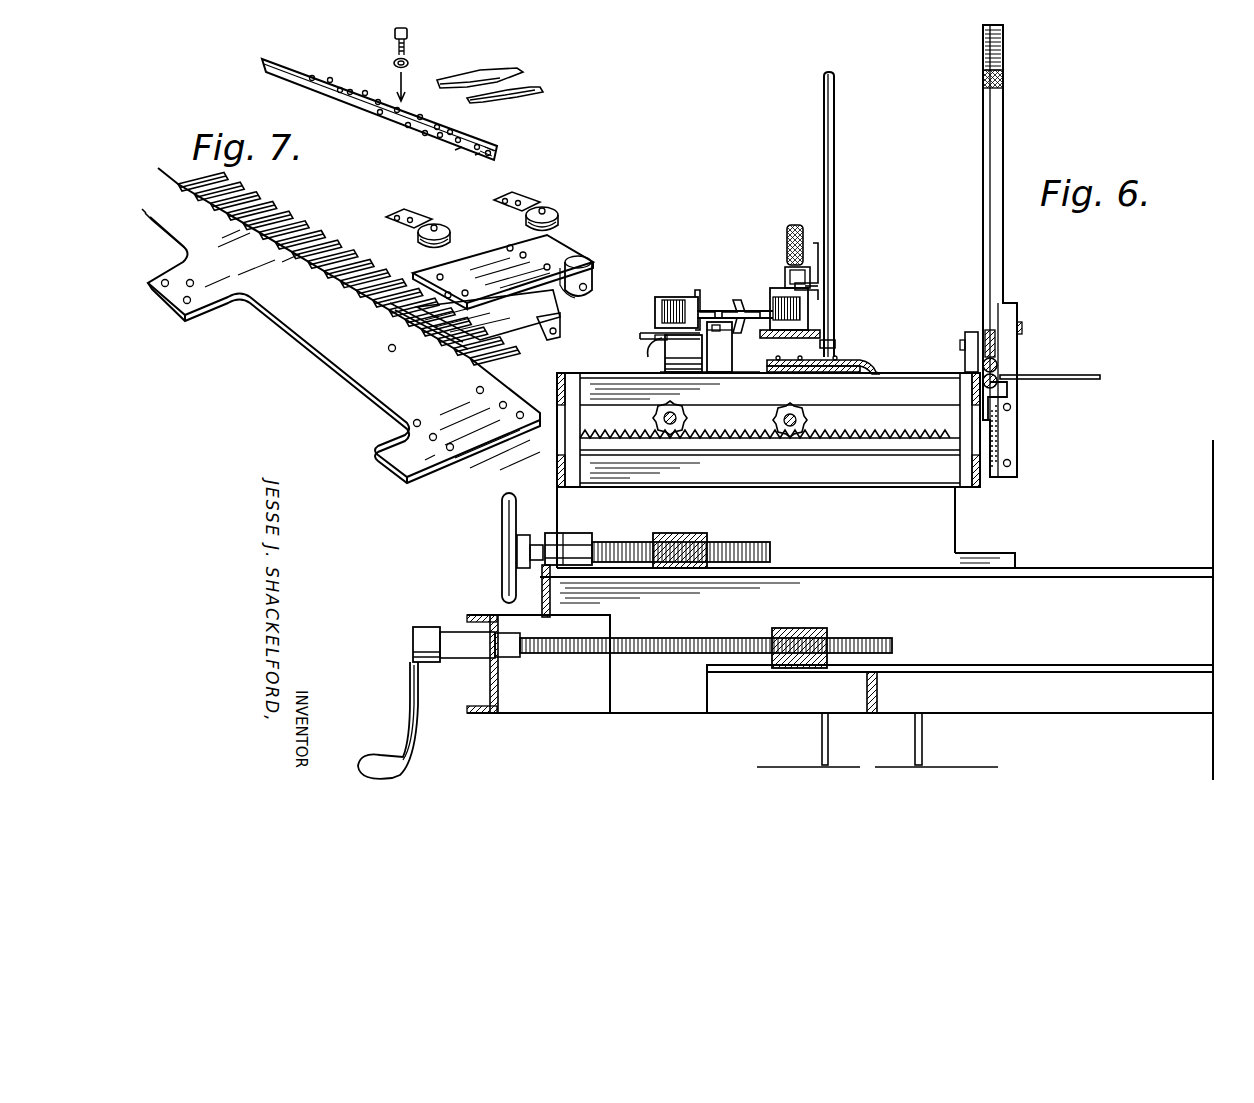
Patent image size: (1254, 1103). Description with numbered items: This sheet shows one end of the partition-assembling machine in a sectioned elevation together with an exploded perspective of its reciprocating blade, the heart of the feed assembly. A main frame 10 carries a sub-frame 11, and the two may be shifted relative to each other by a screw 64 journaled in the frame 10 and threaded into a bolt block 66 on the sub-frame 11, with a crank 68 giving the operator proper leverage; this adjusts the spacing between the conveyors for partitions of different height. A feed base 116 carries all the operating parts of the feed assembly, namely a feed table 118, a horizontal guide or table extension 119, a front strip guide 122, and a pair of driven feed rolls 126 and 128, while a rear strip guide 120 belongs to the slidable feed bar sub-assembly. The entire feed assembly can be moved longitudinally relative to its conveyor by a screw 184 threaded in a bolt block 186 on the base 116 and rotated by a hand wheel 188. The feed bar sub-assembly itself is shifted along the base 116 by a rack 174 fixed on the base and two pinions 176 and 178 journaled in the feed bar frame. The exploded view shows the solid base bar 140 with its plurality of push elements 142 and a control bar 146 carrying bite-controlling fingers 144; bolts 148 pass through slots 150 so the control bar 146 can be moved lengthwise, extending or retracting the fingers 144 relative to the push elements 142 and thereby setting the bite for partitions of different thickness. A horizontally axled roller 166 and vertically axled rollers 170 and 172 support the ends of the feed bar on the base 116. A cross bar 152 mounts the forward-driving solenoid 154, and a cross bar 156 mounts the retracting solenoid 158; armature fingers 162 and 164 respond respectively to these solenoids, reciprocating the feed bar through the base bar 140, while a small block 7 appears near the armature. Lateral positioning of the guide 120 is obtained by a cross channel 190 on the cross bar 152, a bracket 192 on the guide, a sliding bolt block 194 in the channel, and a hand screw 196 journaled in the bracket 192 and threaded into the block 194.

In FIG. 6, the block 7 is at (722, 356).
In FIG. 6, the frame 10 is at (580, 697).
In FIG. 6, the sub-frame 11 is at (885, 622).
In FIG. 6, the screw 64 is at (673, 655).
In FIG. 6, the bolt block 66 is at (797, 628).
In FIG. 6, the crank 68 is at (415, 688).
In FIG. 6, the base 116 is at (876, 610).
In FIG. 6, the feed table 118 is at (768, 415).
In FIG. 6, the horizontal guide or table extension 119 is at (1073, 377).
In FIG. 6, the rear strip guide 120 is at (830, 133).
In FIG. 6, the front strip guide 122 is at (995, 131).
In FIG. 6, the feed roll 126 is at (998, 362).
In FIG. 6, the feed roll 128 is at (1008, 392).
In FIG. 7, the base bar 140 is at (205, 282).
In FIG. 6, the base bar 140 is at (755, 374).
In FIG. 7, the push elements 142 is at (262, 212).
In FIG. 7, the bite-controlling fingers 144 is at (528, 76).
In FIG. 6, the bite-controlling fingers 144 is at (828, 360).
In FIG. 7, the control bar 146 is at (462, 150).
In FIG. 6, the control bar 146 is at (812, 374).
In FIG. 7, the bolts 148 is at (408, 35).
In FIG. 7, the slots 150 is at (400, 112).
In FIG. 6, the cross bar 152 is at (830, 342).
In FIG. 6, the solenoid 154 is at (815, 300).
In FIG. 6, the cross bar 156 is at (664, 357).
In FIG. 6, the solenoid 158 is at (660, 318).
In FIG. 6, the finger 162 is at (727, 307).
In FIG. 6, the finger 164 is at (712, 307).
In FIG. 7, the horizontally axled roller 166 is at (592, 283).
In FIG. 7, the vertical axled roller 170 is at (440, 230).
In FIG. 7, the vertical axled roller 172 is at (562, 219).
In FIG. 6, the rack 174 is at (748, 440).
In FIG. 6, the pinion 176 is at (670, 435).
In FIG. 6, the pinion 178 is at (795, 437).
In FIG. 6, the screw 184 is at (648, 541).
In FIG. 6, the bolt block 186 is at (735, 525).
In FIG. 6, the hand wheel 188 is at (502, 551).
In FIG. 6, the cross channel 190 is at (782, 266).
In FIG. 6, the bracket 192 is at (817, 247).
In FIG. 6, the sliding bolt block 194 is at (810, 283).
In FIG. 6, the hand screw 196 is at (788, 236).